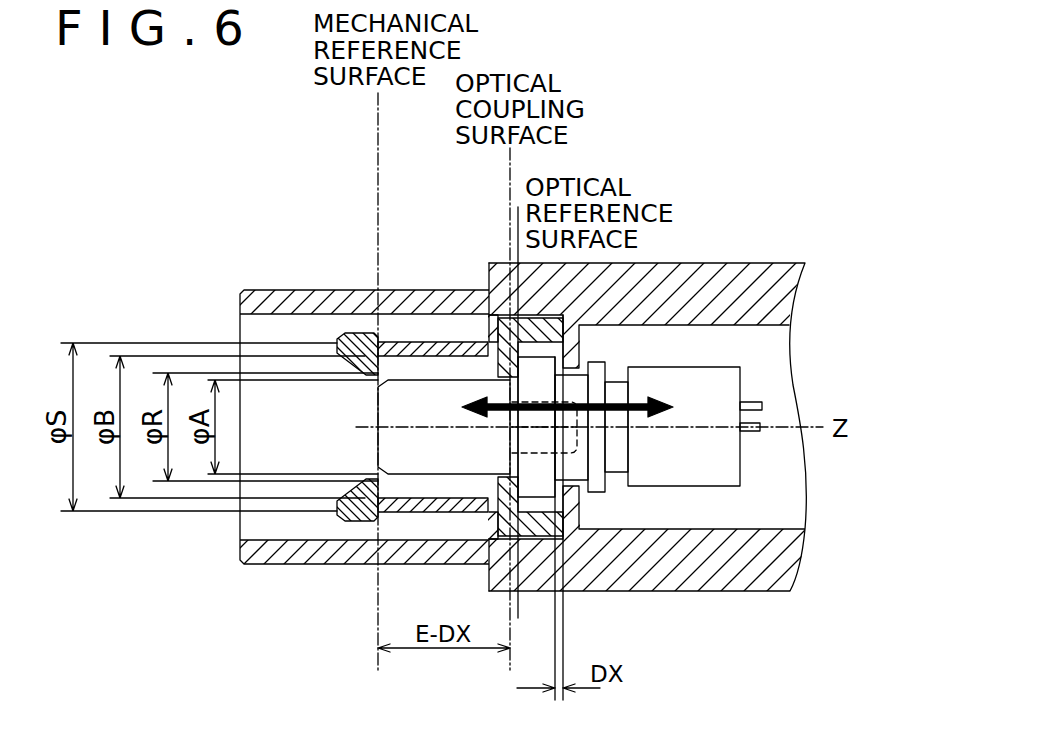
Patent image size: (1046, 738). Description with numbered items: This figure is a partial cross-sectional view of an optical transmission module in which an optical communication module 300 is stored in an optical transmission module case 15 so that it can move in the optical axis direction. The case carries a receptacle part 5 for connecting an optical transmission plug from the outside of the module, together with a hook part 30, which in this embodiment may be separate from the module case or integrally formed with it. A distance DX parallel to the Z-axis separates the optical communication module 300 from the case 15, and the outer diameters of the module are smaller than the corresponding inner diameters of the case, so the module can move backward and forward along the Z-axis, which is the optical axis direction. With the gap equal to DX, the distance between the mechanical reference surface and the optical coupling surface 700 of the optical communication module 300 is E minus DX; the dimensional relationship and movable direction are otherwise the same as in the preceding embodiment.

The receptacle part 5 is at (283, 527).
The optical transmission module case 15 is at (713, 592).
The hook part 30 is at (358, 333).
The optical communication module 300 is at (742, 466).
The optical coupling surface 700 is at (512, 423).